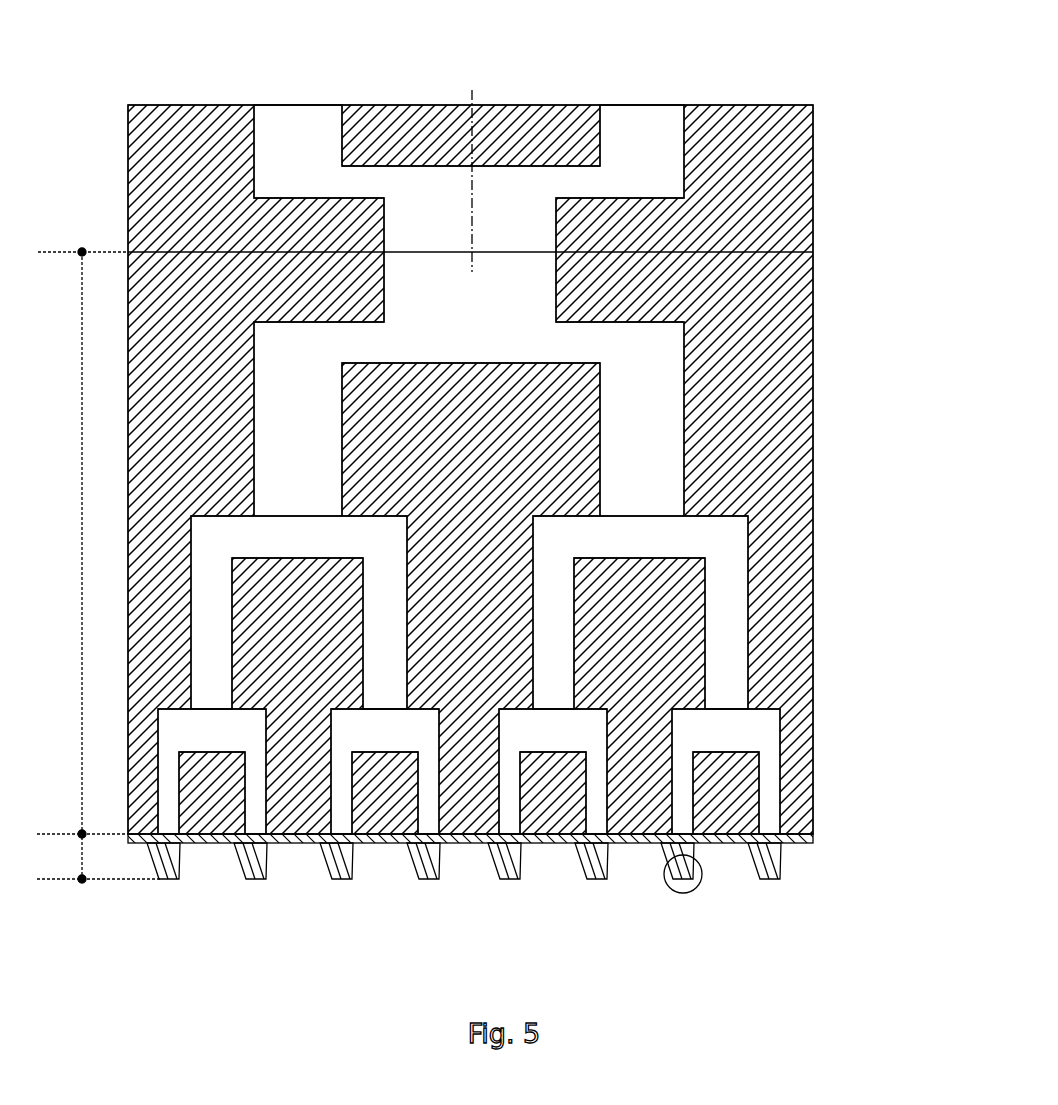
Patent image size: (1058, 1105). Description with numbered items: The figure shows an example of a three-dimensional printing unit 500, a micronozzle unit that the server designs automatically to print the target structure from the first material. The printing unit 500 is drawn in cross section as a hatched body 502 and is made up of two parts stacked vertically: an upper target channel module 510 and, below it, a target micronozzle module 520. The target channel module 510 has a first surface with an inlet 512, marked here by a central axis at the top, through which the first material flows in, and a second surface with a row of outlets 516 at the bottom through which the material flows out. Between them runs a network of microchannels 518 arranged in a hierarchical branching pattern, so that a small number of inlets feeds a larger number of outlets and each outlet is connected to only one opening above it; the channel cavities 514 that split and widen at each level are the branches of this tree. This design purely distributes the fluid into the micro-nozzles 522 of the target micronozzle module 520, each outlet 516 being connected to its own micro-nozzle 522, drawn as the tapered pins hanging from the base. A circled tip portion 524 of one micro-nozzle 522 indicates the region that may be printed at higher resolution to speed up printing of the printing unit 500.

The 3D printing unit 500 is at (809, 73).
The support body 502 is at (811, 335).
The target channel module 510 is at (79, 563).
The inlet 512 is at (453, 268).
The cavity 514 is at (293, 530).
The outlet 516 is at (282, 846).
The microchannel 518 is at (257, 760).
The target micronozzle module 520 is at (98, 858).
The micro-nozzle 522 is at (187, 868).
The tip portion 524 is at (698, 888).